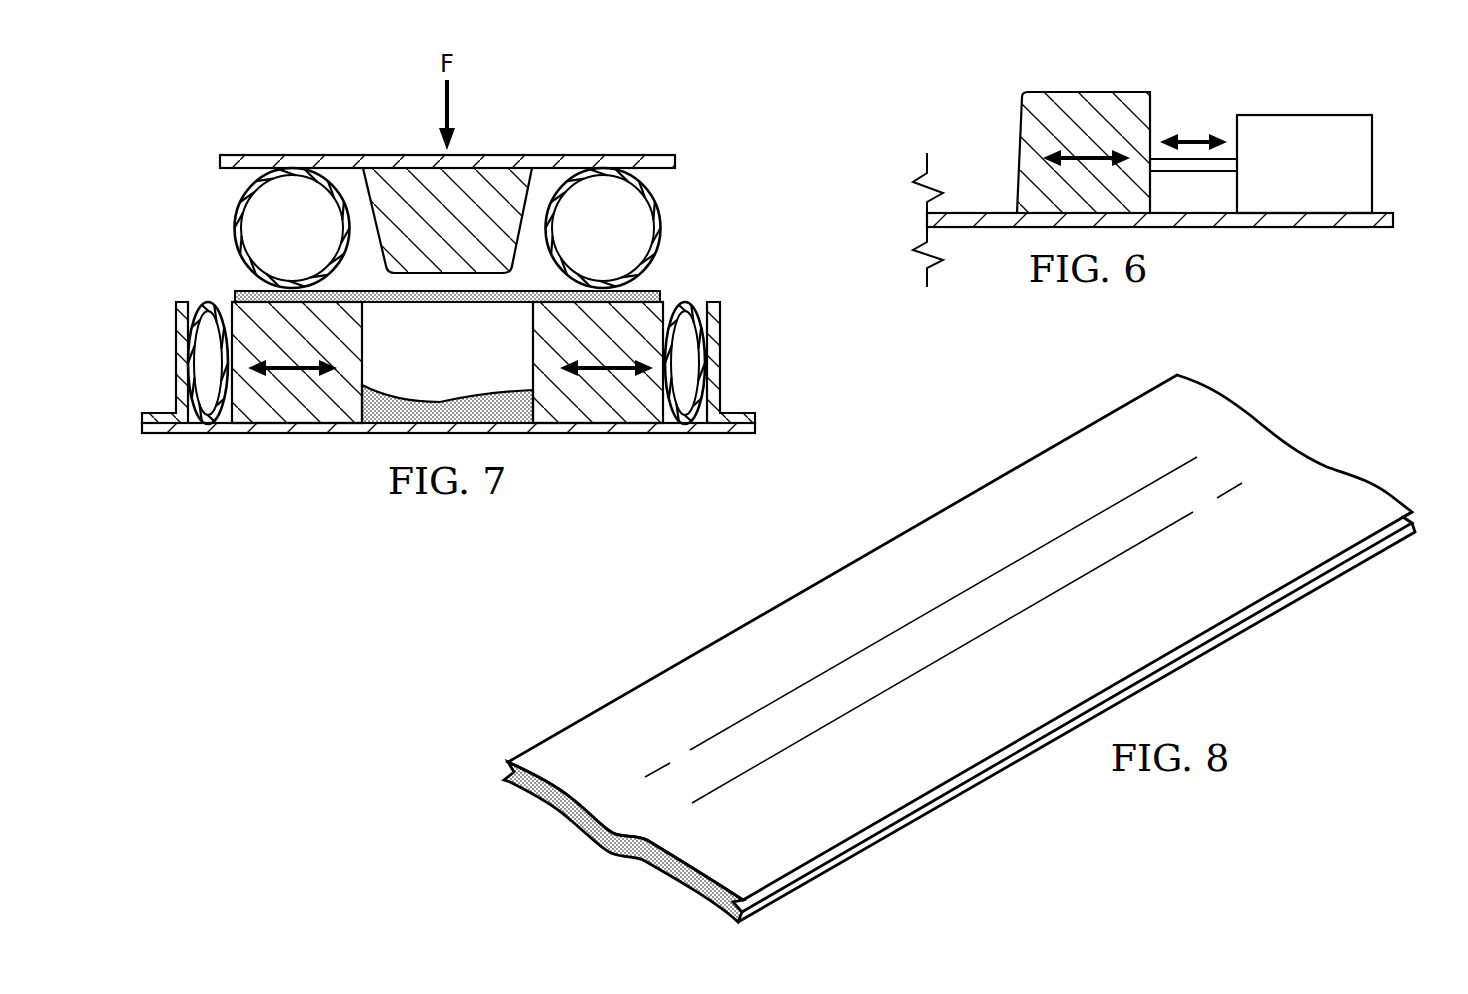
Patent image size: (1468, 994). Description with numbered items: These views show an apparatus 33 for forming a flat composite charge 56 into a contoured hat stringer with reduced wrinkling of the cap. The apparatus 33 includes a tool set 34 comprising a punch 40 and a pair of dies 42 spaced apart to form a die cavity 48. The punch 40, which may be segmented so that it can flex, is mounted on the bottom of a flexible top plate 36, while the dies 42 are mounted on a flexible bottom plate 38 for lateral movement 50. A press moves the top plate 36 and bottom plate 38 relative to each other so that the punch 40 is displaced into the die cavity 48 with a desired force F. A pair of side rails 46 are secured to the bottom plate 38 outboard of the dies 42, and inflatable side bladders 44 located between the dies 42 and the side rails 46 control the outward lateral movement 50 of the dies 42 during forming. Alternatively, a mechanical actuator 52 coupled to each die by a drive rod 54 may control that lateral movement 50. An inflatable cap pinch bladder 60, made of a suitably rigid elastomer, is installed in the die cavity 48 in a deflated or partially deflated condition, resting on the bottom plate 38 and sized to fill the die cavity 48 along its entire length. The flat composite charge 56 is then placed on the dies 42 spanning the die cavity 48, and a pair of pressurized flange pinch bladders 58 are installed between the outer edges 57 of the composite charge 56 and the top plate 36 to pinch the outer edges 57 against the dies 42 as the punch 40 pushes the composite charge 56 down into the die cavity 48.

In FIG. 7, the apparatus 33 is at (727, 156).
In FIG. 7, the tool set 34 is at (772, 310).
In FIG. 7, the top plate 36 is at (222, 162).
In FIG. 7, the bottom plate 38 is at (142, 428).
In FIG. 6, the bottom plate 38 is at (1390, 220).
In FIG. 7, the punch 40 is at (447, 220).
In FIG. 7, the dies 42 is at (296, 416).
In FIG. 6, the dies 42 is at (1026, 157).
In FIG. 7, the side bladders 44 is at (226, 422).
In FIG. 7, the side rails 46 is at (178, 356).
In FIG. 7, the die cavity 48 is at (447, 362).
In FIG. 7, the lateral movement 50 is at (304, 365).
In FIG. 6, the lateral movement 50 is at (1087, 156).
In FIG. 6, the mechanical actuator 52 is at (1305, 115).
In FIG. 6, the drive rod 54 is at (1198, 172).
In FIG. 7, the flat composite charge 56 is at (413, 303).
In FIG. 7, the outer edges 57 is at (242, 282).
In FIG. 7, the flange pinch bladders 58 is at (236, 228).
In FIG. 7, the cap pinch bladder 60 is at (489, 398).
In FIG. 8, the cap pinch bladder 60 is at (856, 564).